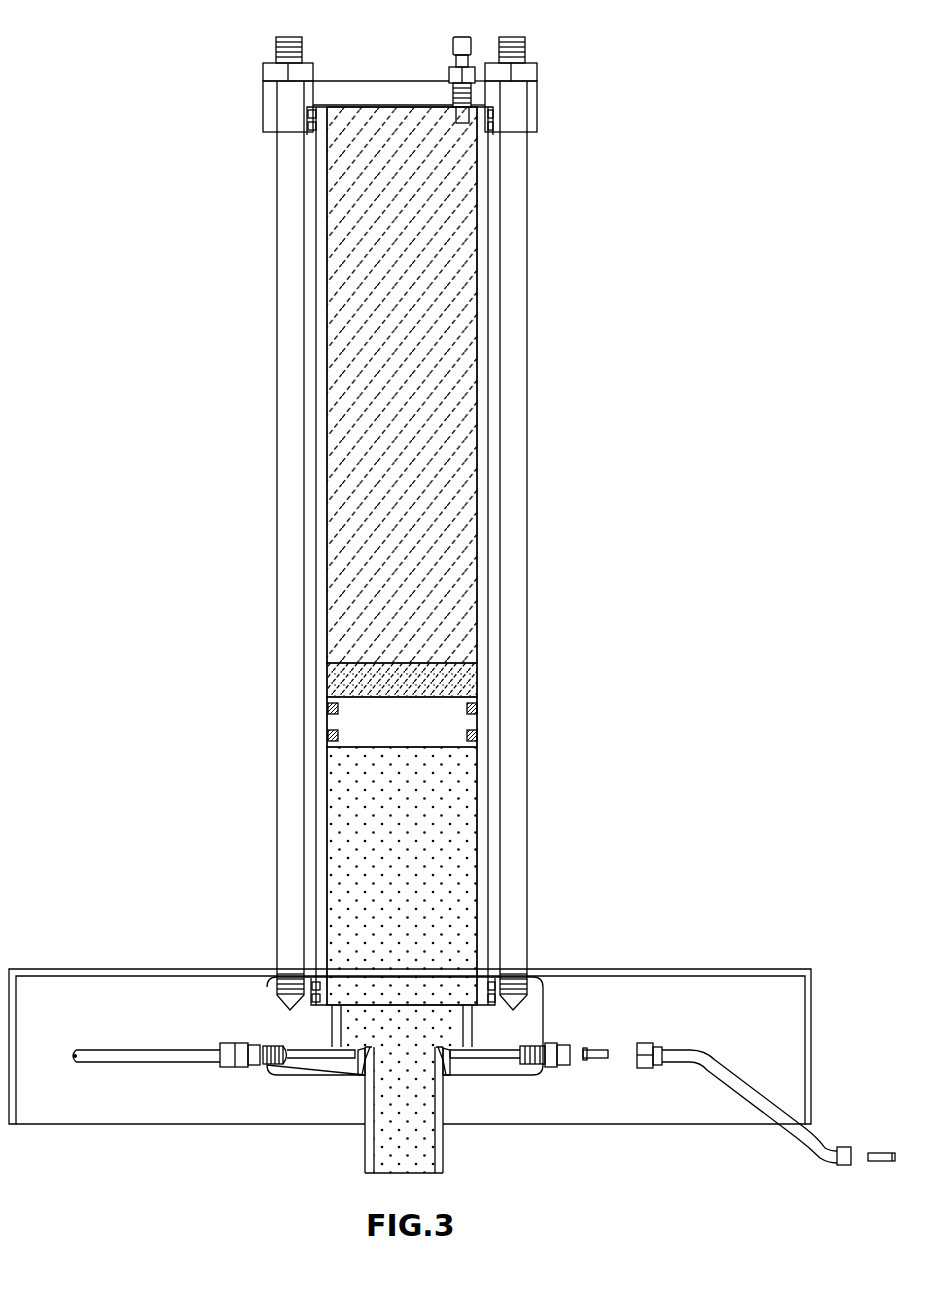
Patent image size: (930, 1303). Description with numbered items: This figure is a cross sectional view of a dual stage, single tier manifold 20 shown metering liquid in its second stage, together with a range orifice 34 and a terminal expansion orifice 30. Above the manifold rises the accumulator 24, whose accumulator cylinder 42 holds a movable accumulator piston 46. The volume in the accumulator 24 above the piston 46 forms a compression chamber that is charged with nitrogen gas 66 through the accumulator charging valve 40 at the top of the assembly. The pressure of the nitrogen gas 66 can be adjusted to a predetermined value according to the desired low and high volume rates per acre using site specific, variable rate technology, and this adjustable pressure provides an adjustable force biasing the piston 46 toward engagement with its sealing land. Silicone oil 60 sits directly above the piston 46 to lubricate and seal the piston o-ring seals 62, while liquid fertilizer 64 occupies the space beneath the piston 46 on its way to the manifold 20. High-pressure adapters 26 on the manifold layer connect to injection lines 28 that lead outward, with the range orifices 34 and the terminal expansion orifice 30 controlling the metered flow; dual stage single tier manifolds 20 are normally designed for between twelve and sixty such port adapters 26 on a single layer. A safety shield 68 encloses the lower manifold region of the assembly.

The single tier manifold 20 is at (543, 1026).
The accumulator 24 is at (538, 122).
The high-pressure adapters 26 is at (572, 1048).
The injection lines 28 is at (763, 1117).
The terminal expansion orifice 30 is at (880, 1162).
The range orifices 34 is at (598, 1058).
The accumulator charging valve 40 is at (470, 37).
The accumulator cylinder 42 is at (318, 460).
The accumulator piston 46 is at (477, 724).
The silicone oil 60 is at (338, 685).
The o-ring seals 62 is at (477, 708).
The liquid fertilizer 64 is at (435, 831).
The nitrogen gas 66 is at (450, 432).
The safety shield 68 is at (767, 972).